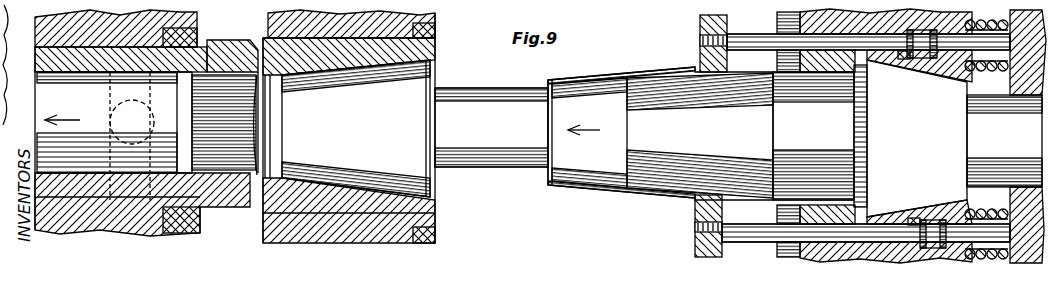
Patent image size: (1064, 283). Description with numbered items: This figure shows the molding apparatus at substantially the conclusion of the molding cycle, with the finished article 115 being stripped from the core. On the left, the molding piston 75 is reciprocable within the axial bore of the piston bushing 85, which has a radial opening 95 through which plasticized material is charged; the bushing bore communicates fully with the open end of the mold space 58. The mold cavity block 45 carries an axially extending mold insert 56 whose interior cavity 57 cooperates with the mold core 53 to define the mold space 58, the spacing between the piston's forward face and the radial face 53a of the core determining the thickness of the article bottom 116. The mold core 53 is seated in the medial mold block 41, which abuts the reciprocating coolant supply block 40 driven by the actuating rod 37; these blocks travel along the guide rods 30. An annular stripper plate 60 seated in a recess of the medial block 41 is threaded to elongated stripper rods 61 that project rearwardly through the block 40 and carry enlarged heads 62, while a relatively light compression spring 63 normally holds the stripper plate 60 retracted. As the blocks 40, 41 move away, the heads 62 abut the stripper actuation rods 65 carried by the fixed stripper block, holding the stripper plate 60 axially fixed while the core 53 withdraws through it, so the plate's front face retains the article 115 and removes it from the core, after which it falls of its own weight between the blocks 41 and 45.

The molding piston 75 is at (67, 70).
The piston bushing 85 is at (215, 60).
The radial opening 95 is at (118, 106).
The mold cavity block 45 is at (345, 20).
The mold insert 56 is at (432, 44).
The interior cavity 57 is at (405, 162).
The guide rods 30 is at (494, 134).
The article bottom 116 is at (548, 80).
The finished article 115 is at (630, 70).
The mold core 53 is at (747, 136).
The radial face of mold core 53a is at (622, 130).
The stripper plate 60 is at (700, 25).
The stripper rods 61 is at (758, 33).
The mold space 58 is at (775, 254).
The medial mold block 41 is at (833, 70).
The coolant supply block 40 is at (915, 143).
The compression spring 63 is at (905, 62).
The enlarged heads 62 is at (930, 60).
The stripper actuation rods 65 is at (1012, 58).
The actuating rod 37 is at (1015, 145).